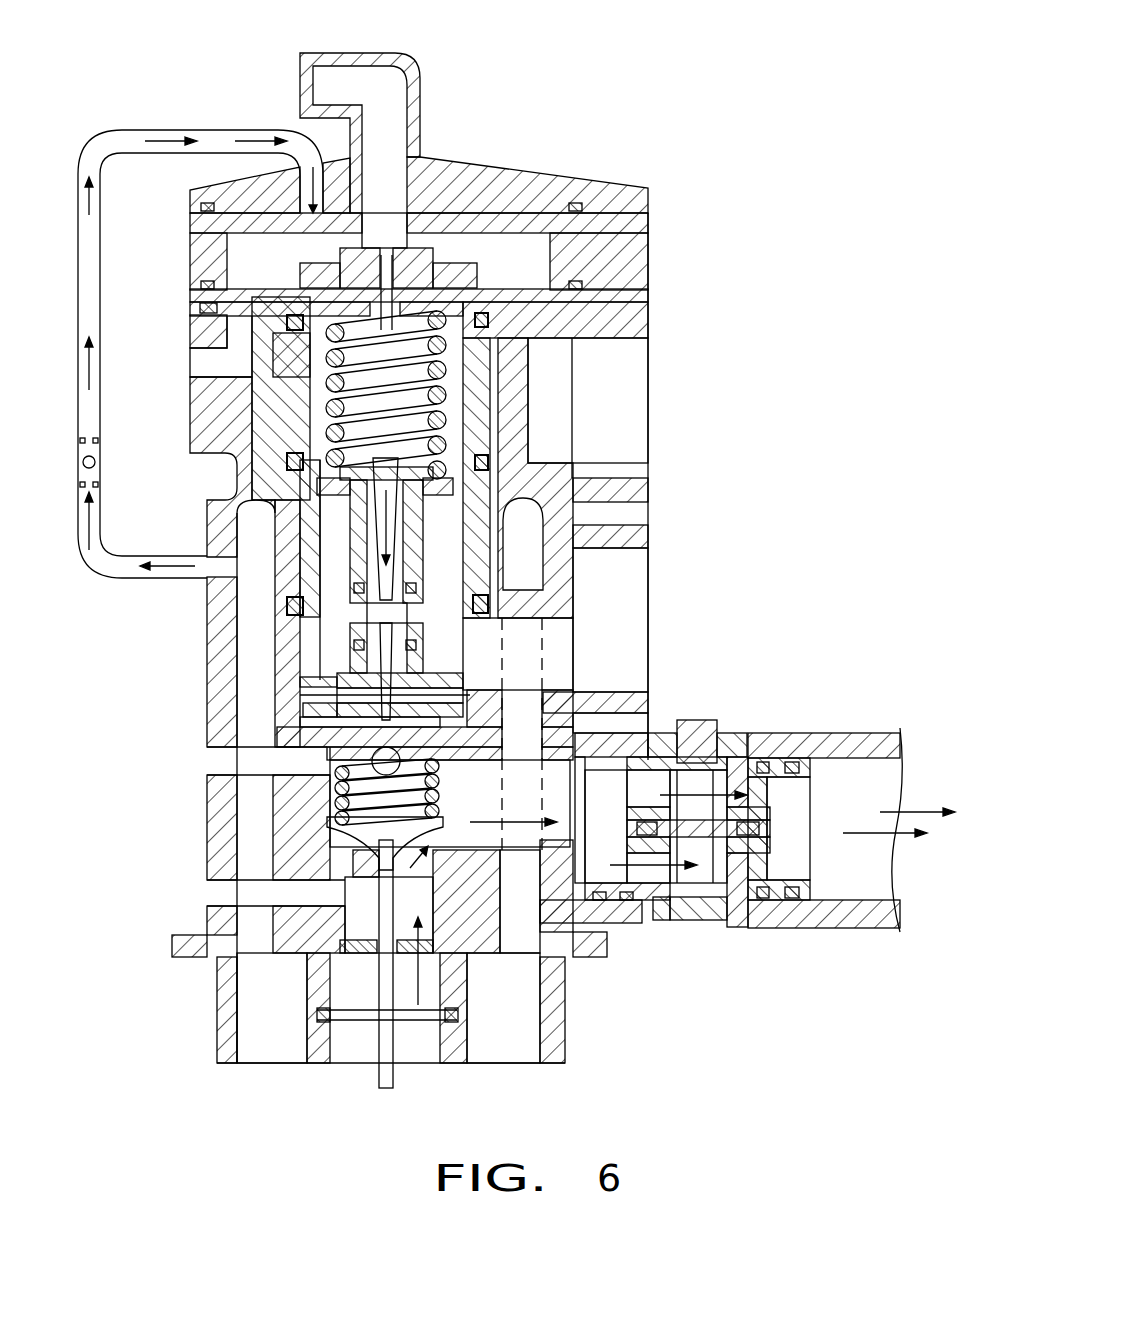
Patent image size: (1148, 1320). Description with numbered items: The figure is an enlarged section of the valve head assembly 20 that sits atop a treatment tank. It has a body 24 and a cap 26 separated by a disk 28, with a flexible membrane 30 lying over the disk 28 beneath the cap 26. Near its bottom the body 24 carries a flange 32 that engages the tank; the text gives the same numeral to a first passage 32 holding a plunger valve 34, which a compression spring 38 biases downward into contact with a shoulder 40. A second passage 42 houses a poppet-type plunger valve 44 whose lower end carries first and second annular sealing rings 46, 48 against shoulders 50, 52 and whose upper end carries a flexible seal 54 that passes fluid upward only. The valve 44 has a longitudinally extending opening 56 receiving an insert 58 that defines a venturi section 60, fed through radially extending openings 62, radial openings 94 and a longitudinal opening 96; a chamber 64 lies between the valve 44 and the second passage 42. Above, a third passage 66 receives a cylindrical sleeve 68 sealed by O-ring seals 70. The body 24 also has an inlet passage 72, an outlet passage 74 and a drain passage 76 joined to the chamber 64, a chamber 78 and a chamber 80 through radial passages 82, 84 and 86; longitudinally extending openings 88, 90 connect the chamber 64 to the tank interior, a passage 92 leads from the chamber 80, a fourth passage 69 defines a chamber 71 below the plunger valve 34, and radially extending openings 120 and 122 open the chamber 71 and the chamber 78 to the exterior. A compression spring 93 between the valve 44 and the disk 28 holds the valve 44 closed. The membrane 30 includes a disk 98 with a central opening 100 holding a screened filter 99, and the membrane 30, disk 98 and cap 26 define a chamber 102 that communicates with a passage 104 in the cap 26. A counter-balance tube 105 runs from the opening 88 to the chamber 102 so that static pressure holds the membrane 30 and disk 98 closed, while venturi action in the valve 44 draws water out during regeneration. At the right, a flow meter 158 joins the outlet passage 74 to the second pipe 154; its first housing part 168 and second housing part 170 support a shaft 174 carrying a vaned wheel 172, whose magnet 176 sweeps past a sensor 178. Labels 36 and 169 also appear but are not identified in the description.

The valve head assembly 20 is at (645, 107).
The body 24 is at (205, 470).
The cap 26 is at (560, 180).
The disk 28 is at (655, 305).
The flexible membrane 30 is at (497, 290).
The flange 32 is at (320, 847).
The plunger valve 34 is at (385, 1074).
The passage 36 is at (360, 757).
The compression spring 38 is at (400, 770).
The shoulder 40 is at (389, 941).
The second passage 42 is at (300, 674).
The poppet-type plunger valve 44 is at (430, 572).
The first annular sealing ring 46 is at (460, 667).
The second annular sealing ring 48 is at (330, 740).
The shoulder 50 is at (465, 620).
The shoulder 52 is at (310, 722).
The flexible seal 54 is at (325, 505).
The longitudinally extending opening 56 is at (380, 530).
The insert 58 is at (370, 560).
The venturi section 60 is at (385, 589).
The radially extending openings 62 is at (435, 625).
The chamber 64 is at (365, 648).
The third passage 66 is at (490, 383).
The cylindrical sleeve 68 is at (478, 395).
The fourth passage 69 is at (340, 928).
The O-ring seals 70 is at (490, 320).
The chamber 71 is at (340, 955).
The inlet passage 72 is at (623, 607).
The outlet passage 74 is at (580, 802).
The drain passage 76 is at (633, 408).
The chamber 78 is at (415, 802).
The chamber 80 is at (300, 417).
The radial passage 82 is at (553, 635).
The radial passage 84 is at (555, 802).
The radial passage 86 is at (560, 365).
The longitudinally extending opening 88 is at (272, 1008).
The longitudinally extending opening 90 is at (503, 956).
The passage 92 is at (203, 367).
The compression spring 93 is at (335, 385).
The radial openings 94 is at (335, 692).
The longitudinal opening 96 is at (455, 725).
The disk 98 is at (302, 276).
The screened filter 99 is at (425, 292).
The central opening 100 is at (347, 273).
The chamber 102 is at (458, 248).
The passage 104 is at (372, 75).
The counter-balance tube 105 is at (195, 130).
The radially extending opening 120 is at (215, 894).
The radially extending opening 122 is at (222, 762).
The second pipe 154 is at (835, 928).
The flow meter 158 is at (720, 940).
The first housing part 168 is at (733, 735).
The seal 169 is at (650, 750).
The second housing part 170 is at (660, 742).
The wheel 172 is at (727, 915).
The shaft 174 is at (755, 852).
The magnet 176 is at (765, 792).
The sensor 178 is at (690, 725).